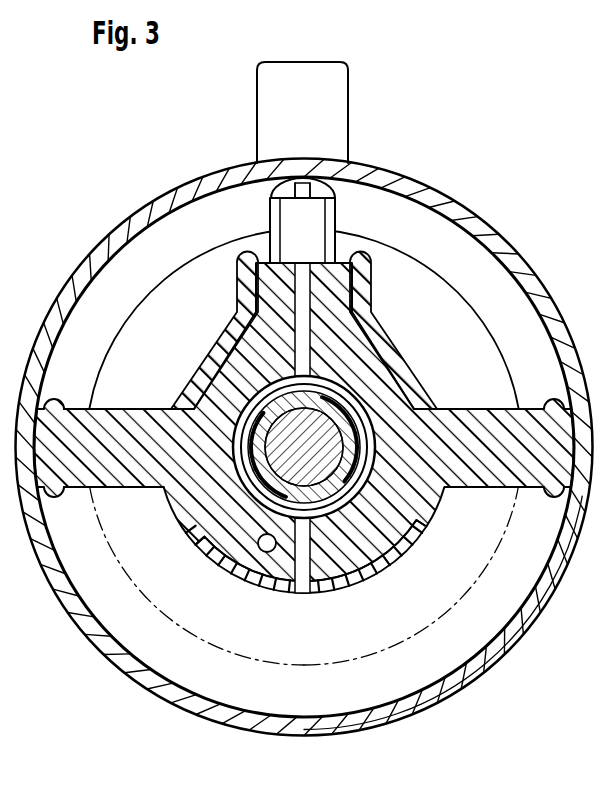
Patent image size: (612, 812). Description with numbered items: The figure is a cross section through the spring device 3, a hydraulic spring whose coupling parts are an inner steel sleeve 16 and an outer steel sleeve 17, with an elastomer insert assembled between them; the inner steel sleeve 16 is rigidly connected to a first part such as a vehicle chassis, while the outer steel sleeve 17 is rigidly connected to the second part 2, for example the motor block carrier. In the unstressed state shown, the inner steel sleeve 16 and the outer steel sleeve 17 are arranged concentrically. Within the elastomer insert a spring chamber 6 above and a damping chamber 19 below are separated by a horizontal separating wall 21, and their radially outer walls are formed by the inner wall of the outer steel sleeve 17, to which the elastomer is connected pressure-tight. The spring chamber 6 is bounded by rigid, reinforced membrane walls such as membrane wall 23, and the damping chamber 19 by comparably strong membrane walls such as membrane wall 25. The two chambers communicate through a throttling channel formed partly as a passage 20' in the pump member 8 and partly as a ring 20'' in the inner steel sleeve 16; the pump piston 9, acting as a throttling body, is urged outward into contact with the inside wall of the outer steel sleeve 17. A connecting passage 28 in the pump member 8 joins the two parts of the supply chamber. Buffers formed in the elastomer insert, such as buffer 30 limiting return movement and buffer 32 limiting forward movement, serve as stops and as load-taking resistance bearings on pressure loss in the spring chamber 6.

The second part 2 is at (345, 90).
The spring device 3 is at (304, 414).
The spring chamber 6 is at (490, 297).
The pump member 8 is at (395, 512).
The pump piston 9 is at (320, 216).
The inner steel sleeve 16 is at (350, 467).
The outer steel sleeve 17 is at (497, 245).
The damping chamber 19 is at (337, 637).
The passage 20' is at (304, 423).
The ring 20'' is at (361, 443).
The separating wall 21 is at (68, 445).
The membrane wall 23 is at (143, 280).
The membrane wall 25 is at (448, 660).
The connecting passage 28 is at (265, 553).
The buffer 30 is at (447, 602).
The buffer 32 is at (216, 265).